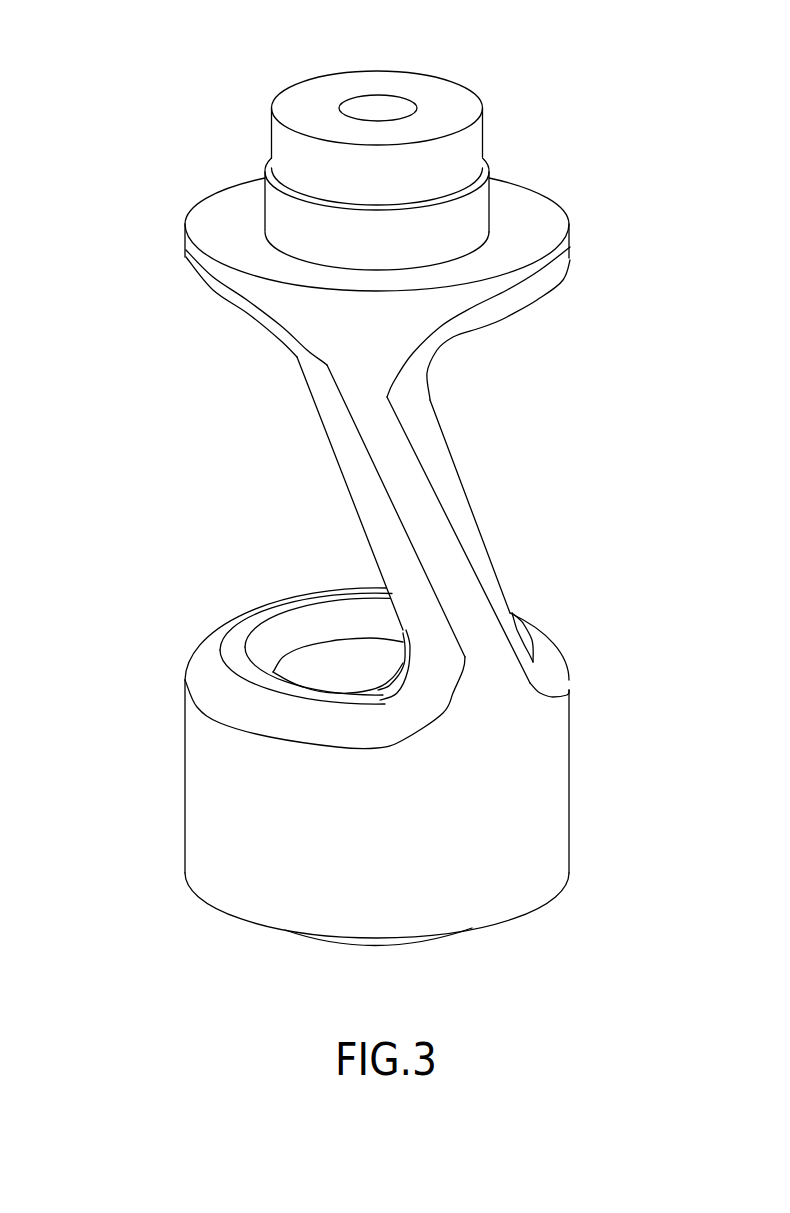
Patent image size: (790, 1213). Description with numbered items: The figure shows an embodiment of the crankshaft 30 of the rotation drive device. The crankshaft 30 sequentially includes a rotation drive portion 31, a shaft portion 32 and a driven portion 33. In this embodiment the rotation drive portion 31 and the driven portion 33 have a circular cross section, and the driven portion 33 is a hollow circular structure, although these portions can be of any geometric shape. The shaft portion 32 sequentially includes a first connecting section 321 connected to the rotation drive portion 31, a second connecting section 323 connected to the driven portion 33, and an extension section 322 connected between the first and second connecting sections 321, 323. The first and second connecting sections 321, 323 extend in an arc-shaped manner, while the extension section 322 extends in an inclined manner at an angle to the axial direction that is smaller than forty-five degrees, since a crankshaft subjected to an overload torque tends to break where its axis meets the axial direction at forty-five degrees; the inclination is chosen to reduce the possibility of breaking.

The crankshaft 30 is at (364, 477).
The rotation drive portion 31 is at (490, 198).
The shaft portion 32 is at (393, 498).
The first connecting section 321 is at (452, 330).
The extension section 322 is at (343, 448).
The second connecting section 323 is at (403, 635).
The driven portion 33 is at (568, 792).